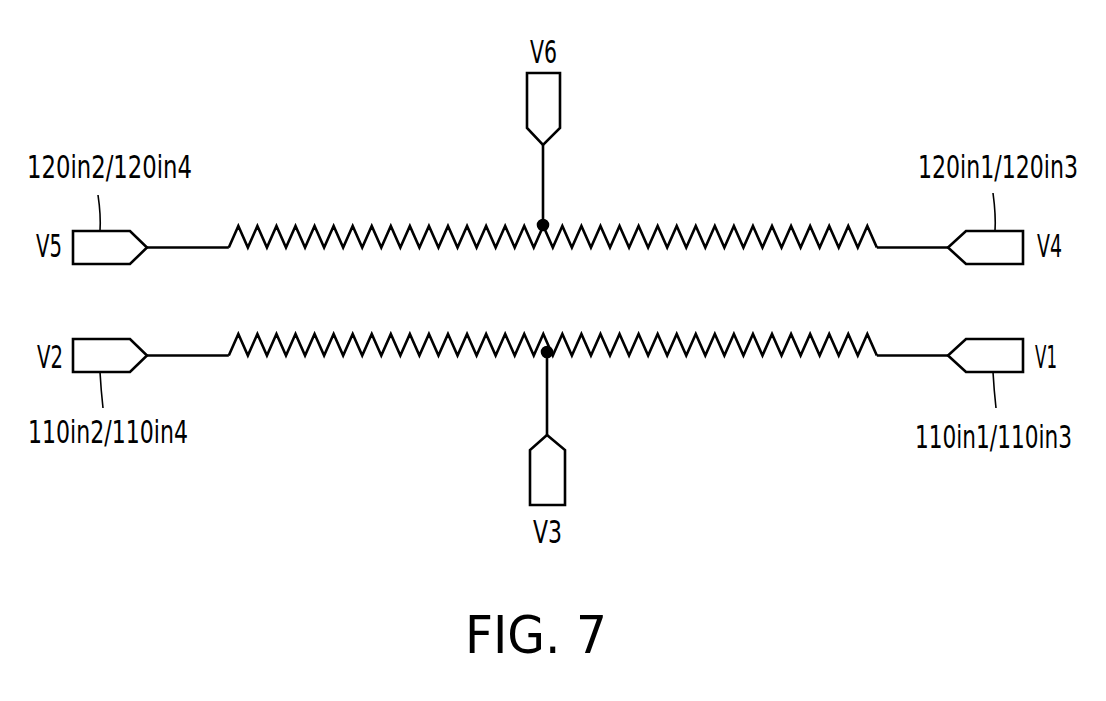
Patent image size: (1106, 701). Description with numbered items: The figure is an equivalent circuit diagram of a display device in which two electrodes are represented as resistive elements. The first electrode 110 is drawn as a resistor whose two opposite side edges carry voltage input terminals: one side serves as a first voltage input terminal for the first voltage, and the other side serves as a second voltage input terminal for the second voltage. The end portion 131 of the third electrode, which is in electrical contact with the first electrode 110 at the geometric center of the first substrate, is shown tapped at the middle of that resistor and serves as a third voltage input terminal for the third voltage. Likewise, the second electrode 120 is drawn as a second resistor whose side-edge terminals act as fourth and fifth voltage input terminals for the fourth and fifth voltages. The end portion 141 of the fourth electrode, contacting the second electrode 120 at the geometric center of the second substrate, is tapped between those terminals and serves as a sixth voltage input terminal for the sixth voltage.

The first electrode 110 is at (655, 365).
The second electrode 120 is at (648, 216).
The end portion 131 is at (565, 478).
The end portion 141 is at (560, 100).